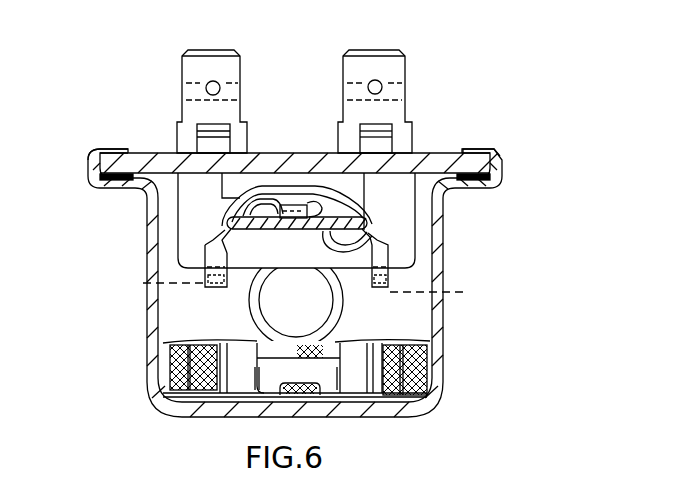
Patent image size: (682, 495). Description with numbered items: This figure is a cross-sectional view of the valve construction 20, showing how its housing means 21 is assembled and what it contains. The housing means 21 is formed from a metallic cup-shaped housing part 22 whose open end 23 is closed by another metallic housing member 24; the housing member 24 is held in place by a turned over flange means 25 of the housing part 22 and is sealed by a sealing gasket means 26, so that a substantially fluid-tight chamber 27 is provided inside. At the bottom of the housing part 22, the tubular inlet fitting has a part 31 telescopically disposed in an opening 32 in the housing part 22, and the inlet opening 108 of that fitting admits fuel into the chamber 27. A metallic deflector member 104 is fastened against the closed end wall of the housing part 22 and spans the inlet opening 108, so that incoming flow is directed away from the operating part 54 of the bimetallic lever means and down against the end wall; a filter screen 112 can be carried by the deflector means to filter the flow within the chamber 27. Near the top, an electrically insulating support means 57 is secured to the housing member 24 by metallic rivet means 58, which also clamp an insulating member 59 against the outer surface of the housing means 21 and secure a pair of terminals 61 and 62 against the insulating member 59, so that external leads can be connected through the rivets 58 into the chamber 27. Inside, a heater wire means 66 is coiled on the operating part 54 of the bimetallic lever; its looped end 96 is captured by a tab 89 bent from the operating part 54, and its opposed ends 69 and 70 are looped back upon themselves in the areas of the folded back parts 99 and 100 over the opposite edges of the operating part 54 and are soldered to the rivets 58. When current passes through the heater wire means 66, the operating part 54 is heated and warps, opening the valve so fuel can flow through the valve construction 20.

The valve construction 20 is at (530, 134).
The housing means 21 is at (450, 318).
The cup-shaped housing part 22 is at (157, 328).
The open end 23 is at (153, 175).
The housing member 24 is at (308, 150).
The turned over flange means 25 is at (112, 148).
The sealing gasket means 26 is at (100, 178).
The chamber 27 is at (182, 301).
The part of inlet fitting 31 is at (253, 300).
The opening 32 is at (258, 320).
The operating part 54 is at (372, 228).
The electrically insulating support means 57 is at (415, 242).
The rivet means 58 is at (205, 270).
The insulating member 59 is at (428, 147).
The terminal 61 is at (380, 63).
The terminal 62 is at (220, 63).
The heater wire means 66 is at (203, 226).
The end of heater wire 69 is at (443, 292).
The end of heater wire 70 is at (156, 285).
The tab 89 is at (288, 203).
The looped end 96 is at (224, 190).
The folded back part 99 is at (323, 250).
The folded back part 100 is at (250, 198).
The deflector member 104 is at (418, 362).
The inlet opening 108 is at (342, 306).
The filter screen 112 is at (170, 368).